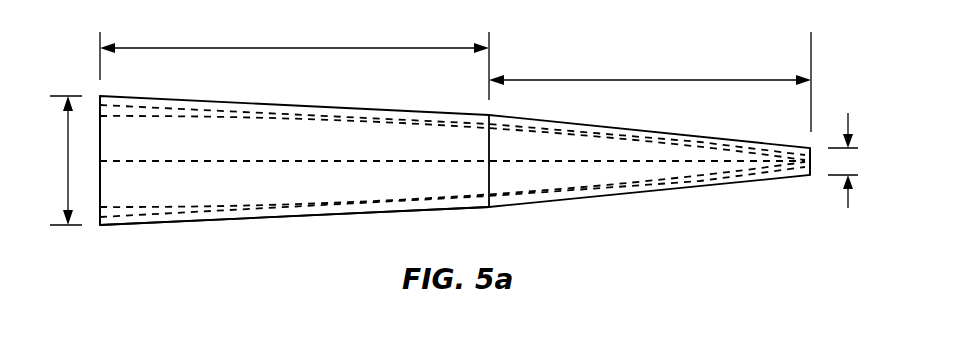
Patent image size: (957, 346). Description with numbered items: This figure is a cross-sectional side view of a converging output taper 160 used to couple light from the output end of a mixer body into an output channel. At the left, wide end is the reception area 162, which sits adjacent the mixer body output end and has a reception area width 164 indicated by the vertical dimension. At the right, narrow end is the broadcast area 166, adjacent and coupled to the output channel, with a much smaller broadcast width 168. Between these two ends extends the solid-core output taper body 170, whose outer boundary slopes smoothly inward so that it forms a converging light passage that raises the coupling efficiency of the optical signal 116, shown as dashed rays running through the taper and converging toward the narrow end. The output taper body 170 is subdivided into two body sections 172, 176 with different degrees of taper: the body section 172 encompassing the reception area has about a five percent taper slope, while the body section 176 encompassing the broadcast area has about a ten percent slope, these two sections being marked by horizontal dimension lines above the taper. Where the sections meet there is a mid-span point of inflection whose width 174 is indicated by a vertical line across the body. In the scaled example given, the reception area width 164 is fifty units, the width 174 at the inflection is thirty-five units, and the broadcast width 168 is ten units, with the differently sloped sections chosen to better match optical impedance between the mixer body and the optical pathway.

The converging output taper 160 is at (752, 222).
The reception area 162 is at (98, 107).
The reception area width 164 is at (68, 185).
The broadcast area 166 is at (815, 152).
The broadcast width 168 is at (852, 162).
The output taper body 170 is at (298, 218).
The body section 172 is at (283, 49).
The width at the mid-span point of inflection 174 is at (488, 168).
The body section 176 is at (630, 82).
The optical signal 116 is at (623, 142).